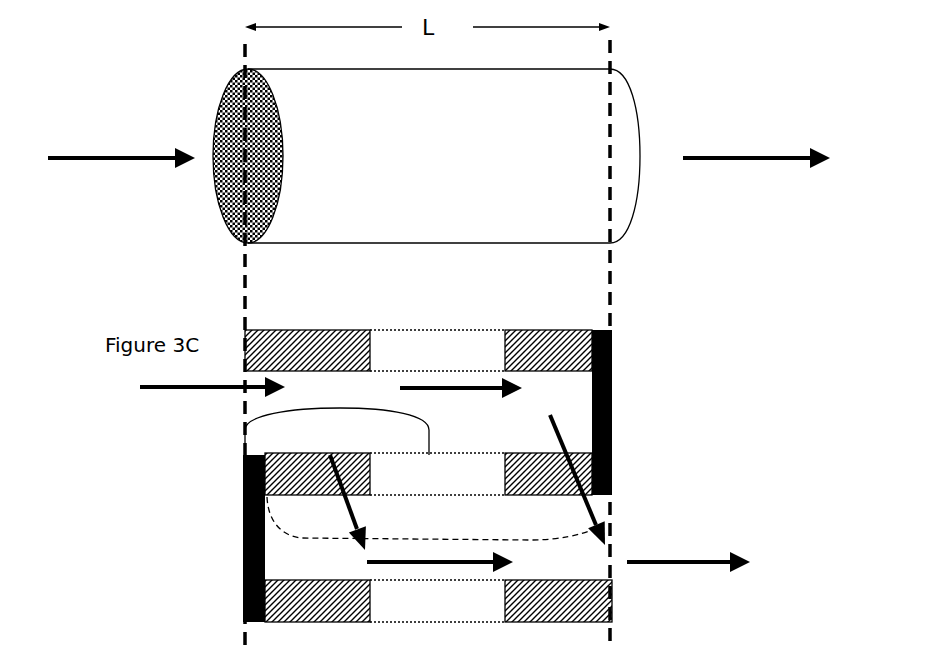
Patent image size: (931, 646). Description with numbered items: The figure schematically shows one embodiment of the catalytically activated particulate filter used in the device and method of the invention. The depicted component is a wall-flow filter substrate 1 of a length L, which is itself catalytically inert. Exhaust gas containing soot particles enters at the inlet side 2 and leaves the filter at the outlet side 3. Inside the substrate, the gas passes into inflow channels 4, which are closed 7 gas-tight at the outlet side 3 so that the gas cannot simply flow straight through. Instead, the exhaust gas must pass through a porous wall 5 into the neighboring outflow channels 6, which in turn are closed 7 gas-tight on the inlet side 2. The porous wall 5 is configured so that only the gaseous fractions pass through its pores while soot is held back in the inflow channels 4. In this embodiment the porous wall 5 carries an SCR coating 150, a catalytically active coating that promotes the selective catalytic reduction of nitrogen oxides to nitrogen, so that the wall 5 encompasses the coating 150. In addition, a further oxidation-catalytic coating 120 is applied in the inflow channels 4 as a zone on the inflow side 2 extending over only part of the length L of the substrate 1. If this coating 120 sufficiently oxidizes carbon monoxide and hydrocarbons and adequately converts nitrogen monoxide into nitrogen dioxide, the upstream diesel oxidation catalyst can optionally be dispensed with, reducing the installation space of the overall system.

The wall-flow filter substrate 1 is at (426, 156).
The inlet side 2 is at (213, 172).
The outlet side 3 is at (640, 157).
The inflow channels 4 is at (433, 390).
The porous wall 5 is at (428, 476).
The outflow channels 6 is at (462, 564).
The closure 7 is at (612, 409).
The oxidation-catalytic coating 120 is at (425, 479).
The SCR coating 150 is at (437, 476).